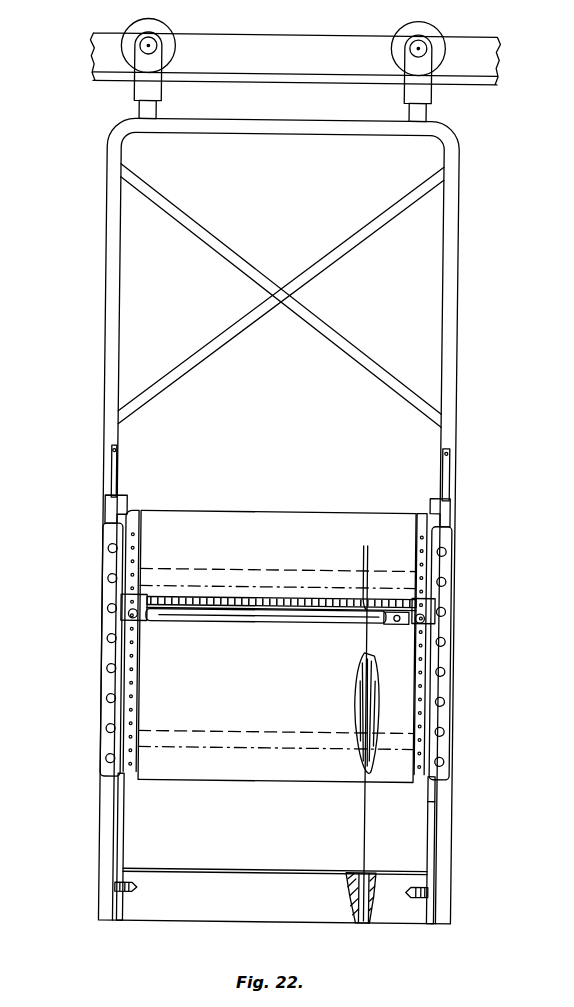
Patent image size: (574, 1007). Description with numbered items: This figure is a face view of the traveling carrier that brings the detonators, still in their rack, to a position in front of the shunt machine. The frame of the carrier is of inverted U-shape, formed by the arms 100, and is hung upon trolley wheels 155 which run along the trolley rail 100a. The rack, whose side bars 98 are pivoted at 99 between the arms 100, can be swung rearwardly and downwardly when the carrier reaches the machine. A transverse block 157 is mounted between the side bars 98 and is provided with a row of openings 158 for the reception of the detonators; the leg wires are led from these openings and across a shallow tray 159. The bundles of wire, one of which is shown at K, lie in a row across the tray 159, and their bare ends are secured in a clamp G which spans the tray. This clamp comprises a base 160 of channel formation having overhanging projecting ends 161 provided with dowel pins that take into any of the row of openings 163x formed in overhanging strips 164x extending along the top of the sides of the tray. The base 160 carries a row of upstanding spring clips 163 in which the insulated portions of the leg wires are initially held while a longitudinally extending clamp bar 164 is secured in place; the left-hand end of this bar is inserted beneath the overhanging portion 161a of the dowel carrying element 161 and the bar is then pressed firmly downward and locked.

The rack 98 is at (432, 838).
The pivot 99 is at (440, 885).
The arms 100 is at (457, 399).
The trolley rail 100a is at (295, 59).
The trolley wheels 155 is at (432, 42).
The transverse block 157 is at (275, 889).
The openings 158 is at (374, 905).
The tray 159 is at (277, 646).
The base 160 is at (209, 627).
The projecting ends 161 is at (447, 604).
The overhanging portion 161a is at (130, 615).
The spring clips 163 is at (253, 607).
The openings 163x is at (430, 571).
The clamp bar 164 is at (300, 628).
The overhanging strips 164x is at (420, 757).
The clamp G is at (362, 616).
The bundle of wire K is at (382, 698).